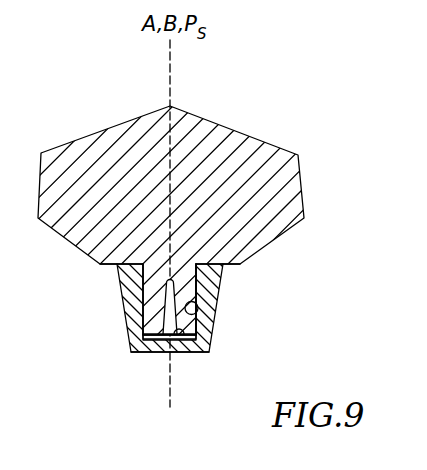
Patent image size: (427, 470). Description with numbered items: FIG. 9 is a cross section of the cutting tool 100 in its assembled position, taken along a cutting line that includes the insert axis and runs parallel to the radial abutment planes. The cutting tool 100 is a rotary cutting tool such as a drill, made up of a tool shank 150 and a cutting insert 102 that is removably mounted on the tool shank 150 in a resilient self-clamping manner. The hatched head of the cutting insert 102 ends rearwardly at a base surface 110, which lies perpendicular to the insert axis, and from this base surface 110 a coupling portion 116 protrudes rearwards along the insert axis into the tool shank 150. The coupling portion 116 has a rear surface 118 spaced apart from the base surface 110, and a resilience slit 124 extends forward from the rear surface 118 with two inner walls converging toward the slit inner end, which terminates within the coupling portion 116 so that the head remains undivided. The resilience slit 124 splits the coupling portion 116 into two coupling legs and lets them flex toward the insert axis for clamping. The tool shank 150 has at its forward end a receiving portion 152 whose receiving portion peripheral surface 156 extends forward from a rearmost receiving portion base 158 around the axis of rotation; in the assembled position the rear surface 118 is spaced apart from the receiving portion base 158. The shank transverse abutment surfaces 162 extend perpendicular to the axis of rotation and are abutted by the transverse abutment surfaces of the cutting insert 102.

The cutting tool 100 is at (247, 112).
The cutting insert 102 is at (104, 128).
The base surface 110 is at (117, 268).
The coupling portion 116 is at (199, 275).
The rear surface 118 is at (167, 325).
The resilience slit 124 is at (170, 337).
The tool shank 150 is at (116, 292).
The receiving portion 152 is at (134, 329).
The receiving portion peripheral surface 156 is at (198, 310).
The receiving portion base 158 is at (182, 340).
The shank transverse abutment surfaces 162 is at (98, 262).